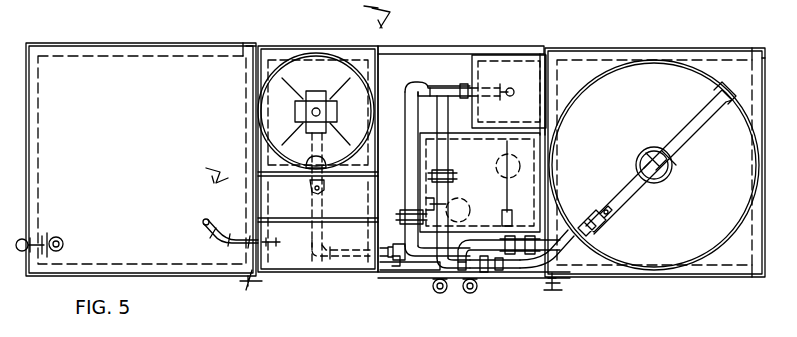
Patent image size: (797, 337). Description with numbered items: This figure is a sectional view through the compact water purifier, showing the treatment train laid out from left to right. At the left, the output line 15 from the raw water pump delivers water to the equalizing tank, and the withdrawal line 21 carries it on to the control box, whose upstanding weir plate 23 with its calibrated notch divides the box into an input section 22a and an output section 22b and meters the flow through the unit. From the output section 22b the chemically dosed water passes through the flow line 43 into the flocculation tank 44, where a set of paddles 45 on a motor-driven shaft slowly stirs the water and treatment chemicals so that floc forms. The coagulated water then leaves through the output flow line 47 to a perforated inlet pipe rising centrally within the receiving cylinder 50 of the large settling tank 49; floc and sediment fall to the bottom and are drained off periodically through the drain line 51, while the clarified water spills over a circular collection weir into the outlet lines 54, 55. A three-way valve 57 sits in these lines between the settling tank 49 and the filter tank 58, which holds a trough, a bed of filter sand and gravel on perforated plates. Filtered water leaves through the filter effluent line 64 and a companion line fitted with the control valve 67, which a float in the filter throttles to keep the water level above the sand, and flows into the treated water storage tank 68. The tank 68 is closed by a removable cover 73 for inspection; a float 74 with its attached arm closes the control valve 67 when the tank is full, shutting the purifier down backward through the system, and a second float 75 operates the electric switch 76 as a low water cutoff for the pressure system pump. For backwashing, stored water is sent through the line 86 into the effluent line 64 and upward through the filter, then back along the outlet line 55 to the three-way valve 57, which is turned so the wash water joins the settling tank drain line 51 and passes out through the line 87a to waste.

The output line 15 is at (62, 244).
The withdrawal line 21 is at (204, 240).
The input section 22a is at (293, 265).
The output section 22b is at (278, 210).
The weir plate 23 is at (340, 220).
The flow line 43 is at (306, 168).
The flocculation tank 44 is at (363, 152).
The paddles 45 is at (338, 88).
The output flow line 47 is at (396, 270).
The settling tank 49 is at (590, 88).
The receiving cylinder 50 is at (643, 152).
The drain line 51 is at (572, 228).
The outlet line 54 is at (525, 270).
The outlet line 55 is at (445, 96).
The three-way valve 57 is at (478, 270).
The filter tank 58 is at (543, 96).
The filter effluent line 64 is at (426, 90).
The control valve 67 is at (502, 218).
The treated water storage tank 68 is at (410, 262).
The removable cover 73 is at (500, 143).
The float 74 is at (498, 164).
The second float 75 is at (462, 204).
The electric switch 76 is at (432, 202).
The line 86 is at (437, 294).
The line 87a is at (472, 294).